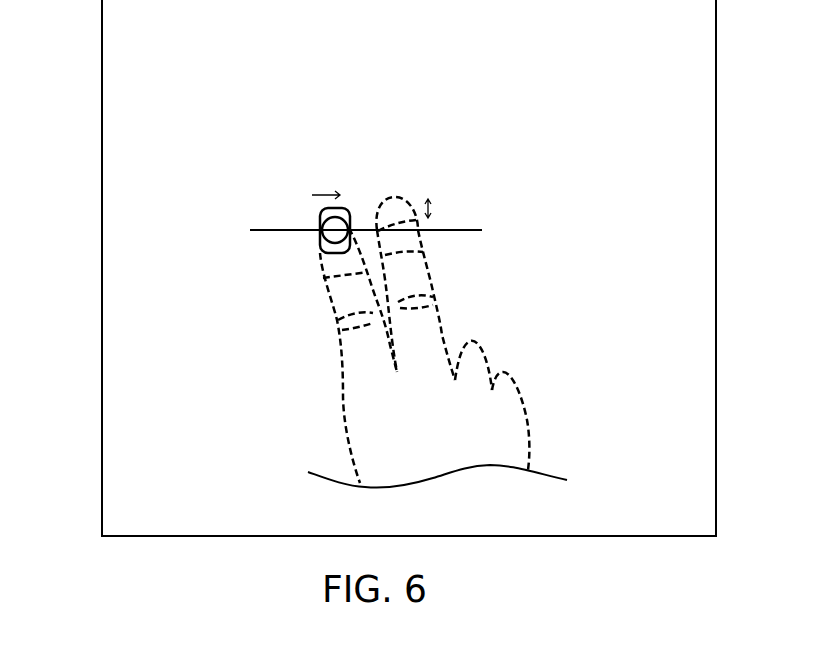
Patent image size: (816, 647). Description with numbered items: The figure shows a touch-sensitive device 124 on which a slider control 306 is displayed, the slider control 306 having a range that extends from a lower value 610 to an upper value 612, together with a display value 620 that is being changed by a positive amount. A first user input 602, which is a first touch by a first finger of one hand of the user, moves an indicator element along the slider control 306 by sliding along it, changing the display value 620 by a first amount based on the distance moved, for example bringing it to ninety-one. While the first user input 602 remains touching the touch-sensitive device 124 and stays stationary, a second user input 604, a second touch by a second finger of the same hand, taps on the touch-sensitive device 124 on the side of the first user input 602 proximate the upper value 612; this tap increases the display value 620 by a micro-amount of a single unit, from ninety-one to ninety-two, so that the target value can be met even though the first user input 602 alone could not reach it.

The touch-sensitive device 124 is at (100, 257).
The slider control 306 is at (463, 229).
The first user input 602 is at (335, 315).
The second user input 604 is at (435, 300).
The lower value 610 is at (230, 229).
The upper value 612 is at (528, 232).
The display value 620 is at (292, 182).